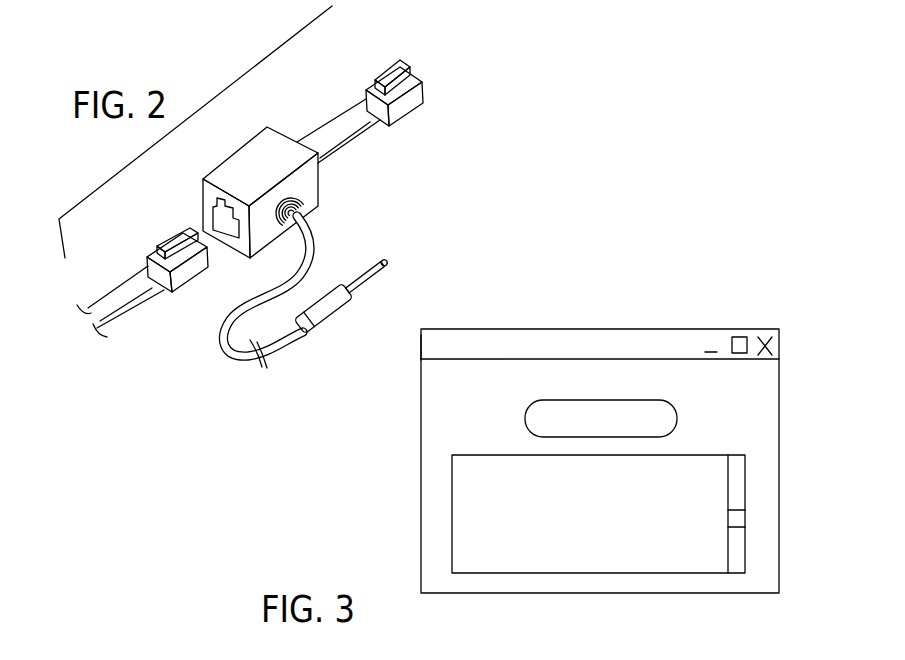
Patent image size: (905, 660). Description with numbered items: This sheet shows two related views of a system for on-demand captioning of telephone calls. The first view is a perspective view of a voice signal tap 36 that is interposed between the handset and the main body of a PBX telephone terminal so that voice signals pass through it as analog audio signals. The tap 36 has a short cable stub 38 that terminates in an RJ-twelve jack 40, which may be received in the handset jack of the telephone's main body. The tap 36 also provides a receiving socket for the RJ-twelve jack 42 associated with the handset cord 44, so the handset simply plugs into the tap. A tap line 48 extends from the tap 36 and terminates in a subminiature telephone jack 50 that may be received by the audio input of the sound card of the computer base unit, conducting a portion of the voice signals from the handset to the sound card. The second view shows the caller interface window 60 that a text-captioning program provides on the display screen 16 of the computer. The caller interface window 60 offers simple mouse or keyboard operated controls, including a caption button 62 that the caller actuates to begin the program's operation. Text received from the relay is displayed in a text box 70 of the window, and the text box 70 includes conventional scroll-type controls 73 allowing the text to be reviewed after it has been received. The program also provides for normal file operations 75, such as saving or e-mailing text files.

In FIG. 3, the display screen 16 is at (705, 313).
In FIG. 2, the voice signal tap 36 is at (258, 164).
In FIG. 2, the short cable stub 38 is at (335, 122).
In FIG. 2, the RJ-12 jack 40 is at (375, 90).
In FIG. 2, the RJ-12 jack 42 is at (150, 254).
In FIG. 2, the handset cord 44 is at (118, 285).
In FIG. 2, the tap line 48 is at (230, 353).
In FIG. 2, the subminiature telephone jack 50 is at (333, 298).
In FIG. 3, the caller interface window 60 is at (515, 343).
In FIG. 3, the caption button 62 is at (600, 399).
In FIG. 3, the text box 70 is at (452, 516).
In FIG. 3, the scroll-type controls 73 is at (735, 518).
In FIG. 3, the file operations 75 is at (424, 347).